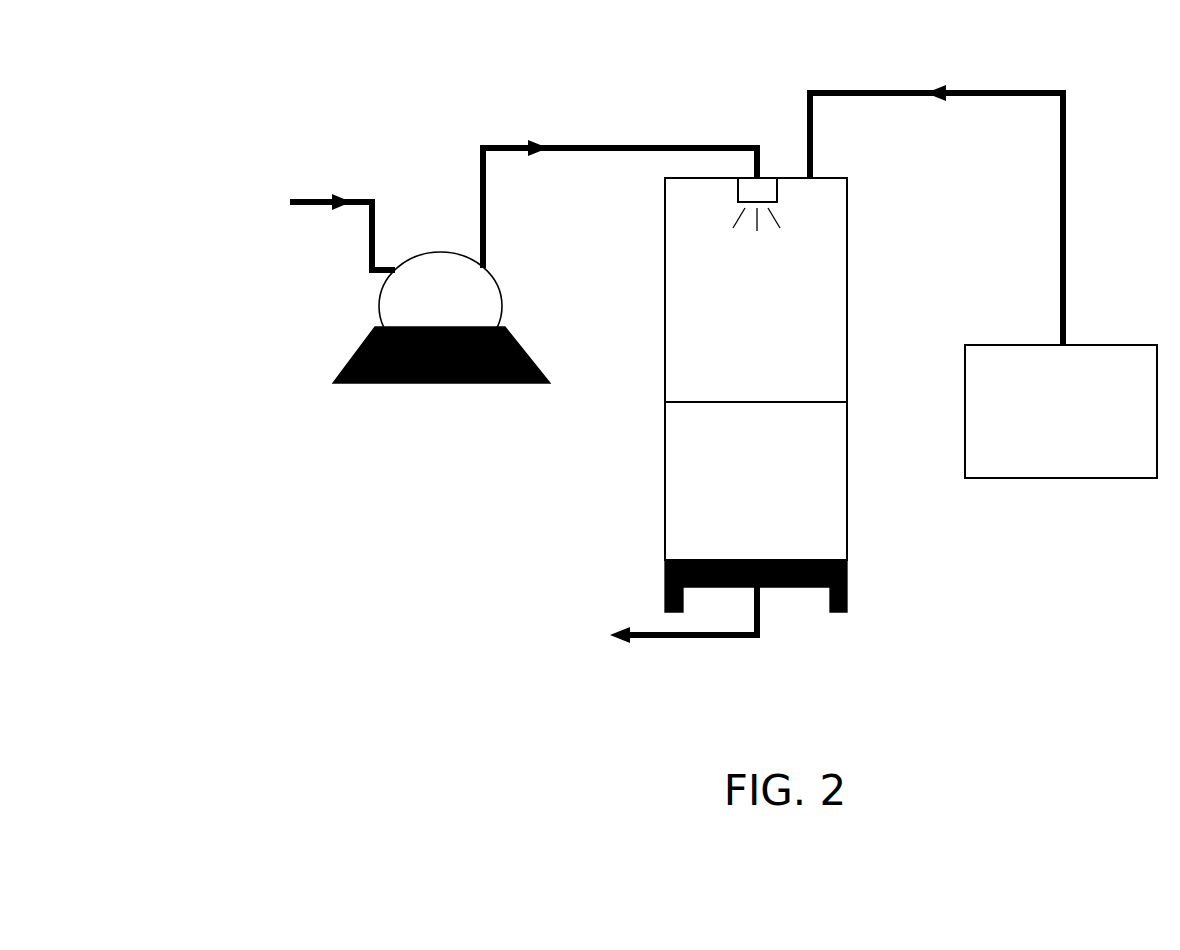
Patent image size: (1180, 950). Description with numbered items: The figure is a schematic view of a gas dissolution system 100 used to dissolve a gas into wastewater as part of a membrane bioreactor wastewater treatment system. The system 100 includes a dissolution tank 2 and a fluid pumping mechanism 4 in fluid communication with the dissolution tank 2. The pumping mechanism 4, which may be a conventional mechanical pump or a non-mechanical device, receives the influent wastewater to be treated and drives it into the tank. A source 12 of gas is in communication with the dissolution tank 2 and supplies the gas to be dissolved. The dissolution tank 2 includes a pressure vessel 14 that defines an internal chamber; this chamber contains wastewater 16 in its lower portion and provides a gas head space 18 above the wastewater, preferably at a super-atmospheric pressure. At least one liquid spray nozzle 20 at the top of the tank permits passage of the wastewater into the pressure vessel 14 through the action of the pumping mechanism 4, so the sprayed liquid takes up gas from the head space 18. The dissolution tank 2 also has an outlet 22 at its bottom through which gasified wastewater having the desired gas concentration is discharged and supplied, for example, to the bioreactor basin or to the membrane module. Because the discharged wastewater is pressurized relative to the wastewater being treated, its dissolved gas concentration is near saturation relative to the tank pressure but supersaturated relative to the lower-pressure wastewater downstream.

The gas dissolution system 100 is at (496, 73).
The dissolution tank 2 is at (860, 307).
The fluid pumping mechanism 4 is at (434, 397).
The source of gas 12 is at (1061, 411).
The pressure vessel 14 is at (657, 391).
The wastewater 16 is at (756, 481).
The gas head space 18 is at (756, 290).
The liquid spray nozzle 20 is at (762, 192).
The outlet 22 is at (769, 592).